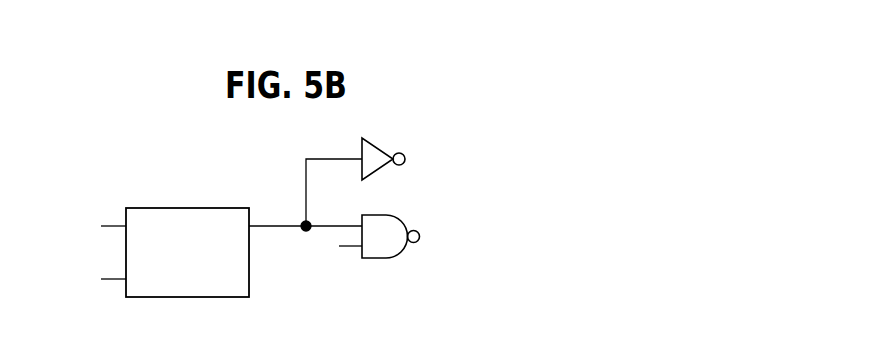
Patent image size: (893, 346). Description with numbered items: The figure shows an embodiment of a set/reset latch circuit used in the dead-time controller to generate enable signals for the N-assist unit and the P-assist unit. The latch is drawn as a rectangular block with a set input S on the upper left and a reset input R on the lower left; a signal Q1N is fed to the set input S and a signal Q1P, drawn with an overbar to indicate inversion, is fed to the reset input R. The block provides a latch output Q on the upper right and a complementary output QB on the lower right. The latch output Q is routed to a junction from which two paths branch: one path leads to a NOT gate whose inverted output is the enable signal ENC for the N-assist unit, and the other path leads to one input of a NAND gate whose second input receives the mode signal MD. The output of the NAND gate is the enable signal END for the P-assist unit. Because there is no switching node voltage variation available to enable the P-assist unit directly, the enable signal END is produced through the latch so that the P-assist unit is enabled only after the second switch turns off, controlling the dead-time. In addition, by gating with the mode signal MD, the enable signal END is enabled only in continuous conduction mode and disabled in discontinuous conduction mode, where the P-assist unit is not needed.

The set input signal Q1N is at (91, 225).
The reset input signal Q1P is at (88, 262).
The set input S is at (136, 225).
The reset input R is at (139, 278).
The latch output Q is at (266, 225).
The inverted latch output QB is at (231, 278).
The mode signal MD is at (329, 246).
The enable signal ENC is at (405, 159).
The enable signal END is at (420, 236).